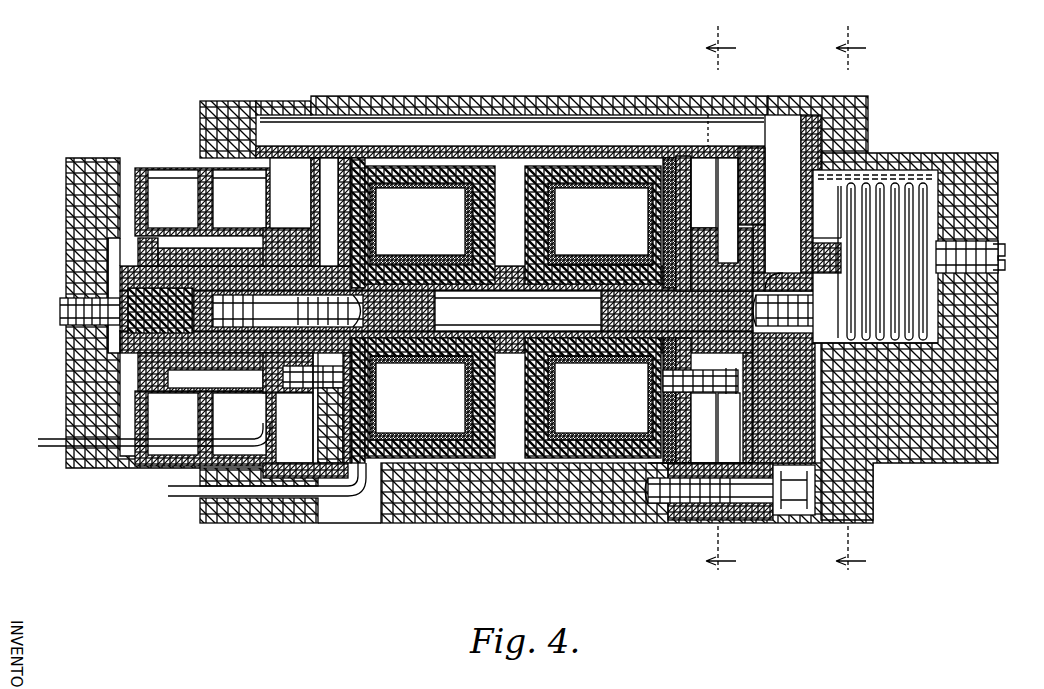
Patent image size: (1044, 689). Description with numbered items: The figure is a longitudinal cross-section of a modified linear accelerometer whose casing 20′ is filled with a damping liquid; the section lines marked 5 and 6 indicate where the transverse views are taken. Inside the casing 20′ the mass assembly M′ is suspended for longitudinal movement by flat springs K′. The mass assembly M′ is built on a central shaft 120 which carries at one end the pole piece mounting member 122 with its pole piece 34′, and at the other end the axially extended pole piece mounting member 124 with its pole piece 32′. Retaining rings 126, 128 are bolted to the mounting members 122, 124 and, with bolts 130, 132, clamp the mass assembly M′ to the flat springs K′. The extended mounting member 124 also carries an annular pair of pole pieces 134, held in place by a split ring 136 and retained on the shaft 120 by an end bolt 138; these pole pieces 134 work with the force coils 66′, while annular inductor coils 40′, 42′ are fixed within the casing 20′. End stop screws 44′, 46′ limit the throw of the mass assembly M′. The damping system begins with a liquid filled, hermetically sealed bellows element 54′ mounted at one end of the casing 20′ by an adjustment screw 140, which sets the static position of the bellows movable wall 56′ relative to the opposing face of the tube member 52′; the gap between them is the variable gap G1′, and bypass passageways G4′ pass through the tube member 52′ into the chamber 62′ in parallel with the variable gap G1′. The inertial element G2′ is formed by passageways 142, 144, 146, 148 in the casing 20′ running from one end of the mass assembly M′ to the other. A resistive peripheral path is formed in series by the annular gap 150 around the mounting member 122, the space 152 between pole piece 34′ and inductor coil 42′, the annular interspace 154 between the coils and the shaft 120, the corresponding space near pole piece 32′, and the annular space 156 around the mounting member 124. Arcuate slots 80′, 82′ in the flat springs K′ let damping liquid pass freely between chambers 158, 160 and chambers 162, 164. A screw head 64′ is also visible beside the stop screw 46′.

The casing 20′ is at (452, 523).
The end stop screw 44′ is at (54, 292).
The force coils 66′ is at (206, 317).
The chamber 158 is at (290, 193).
The retaining ring 128 is at (290, 218).
The chamber 160 is at (331, 212).
The pole piece mounting member 124 is at (332, 194).
The pole pieces 134 is at (250, 237).
The end bolt 138 is at (245, 288).
The split ring 136 is at (119, 304).
The pole piece 32′ is at (350, 150).
The pole piece 34′ is at (660, 148).
The passageway 142 is at (472, 138).
The annular gap 150 is at (697, 135).
The inertial element G2′ is at (573, 132).
The inductor coil 40′ is at (430, 312).
The inductor coil 42′ is at (593, 312).
The annular interspace 154 is at (550, 266).
The central shaft 120 is at (600, 349).
The mass assembly M′ is at (436, 309).
The bolt 132 is at (292, 382).
The flat springs K′ is at (496, 428).
The arcuate slot 80′ is at (332, 408).
The arcuate slot 82′ is at (735, 408).
The annular space 156 is at (335, 462).
The bolt 130 is at (735, 372).
The chamber 162 is at (722, 224).
The pole piece mounting member 122 is at (700, 193).
The chamber 164 is at (728, 210).
The retaining ring 126 is at (718, 232).
The passageway 144 is at (760, 183).
The passageway 146 is at (795, 268).
The tube member 52′ is at (790, 268).
The bolt 64′ is at (812, 290).
The end stop screw 46′ is at (812, 318).
The bellows element 54′ is at (887, 175).
The bellows movable wall 56′ is at (840, 176).
The variable gap G1′ is at (829, 212).
The bypass passageways G4′ is at (827, 224).
The adjustment screw 140 is at (998, 252).
The passageway 148 is at (768, 500).
The space 152 is at (648, 460).
The chamber 62′ is at (820, 335).
The section line 6 is at (721, 306).
The section line 5 is at (851, 302).